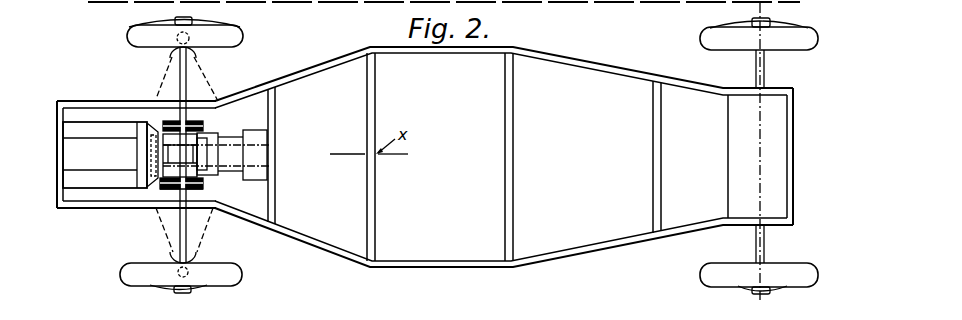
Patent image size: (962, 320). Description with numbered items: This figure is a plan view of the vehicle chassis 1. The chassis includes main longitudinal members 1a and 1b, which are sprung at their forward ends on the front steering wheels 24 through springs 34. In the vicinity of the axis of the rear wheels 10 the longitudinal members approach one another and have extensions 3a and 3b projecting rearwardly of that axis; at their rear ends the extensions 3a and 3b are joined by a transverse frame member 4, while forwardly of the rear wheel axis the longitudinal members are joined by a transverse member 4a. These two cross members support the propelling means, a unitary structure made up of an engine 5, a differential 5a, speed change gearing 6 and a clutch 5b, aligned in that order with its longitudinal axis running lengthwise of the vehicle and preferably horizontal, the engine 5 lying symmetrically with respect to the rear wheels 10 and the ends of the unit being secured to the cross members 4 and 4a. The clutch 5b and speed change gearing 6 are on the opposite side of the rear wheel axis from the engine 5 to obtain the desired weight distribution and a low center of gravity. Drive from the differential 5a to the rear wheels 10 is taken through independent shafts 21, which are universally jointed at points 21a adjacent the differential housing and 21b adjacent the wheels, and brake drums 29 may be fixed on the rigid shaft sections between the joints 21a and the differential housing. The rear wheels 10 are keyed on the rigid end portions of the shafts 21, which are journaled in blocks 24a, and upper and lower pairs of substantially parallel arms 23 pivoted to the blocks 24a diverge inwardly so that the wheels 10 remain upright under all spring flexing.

The chassis 1 is at (511, 54).
The main longitudinal member 1a is at (327, 66).
The main longitudinal member 1b is at (337, 252).
The extension 3a is at (102, 100).
The extension 3b is at (77, 209).
The transverse frame member 4 is at (59, 155).
The transverse member 4a is at (306, 124).
The engine 5 is at (110, 155).
The differential 5a is at (199, 136).
The clutch 5b is at (262, 139).
The speed change gearing 6 is at (235, 157).
The rear wheel 10 is at (130, 35).
The independent shaft 21 is at (188, 70).
The universal joint 21a is at (177, 121).
The universal joint 21b is at (202, 25).
The arm 23 is at (167, 78).
The front steering wheel 24 is at (700, 38).
The block 24a is at (172, 55).
The brake drum 29 is at (203, 180).
The spring 34 is at (765, 73).